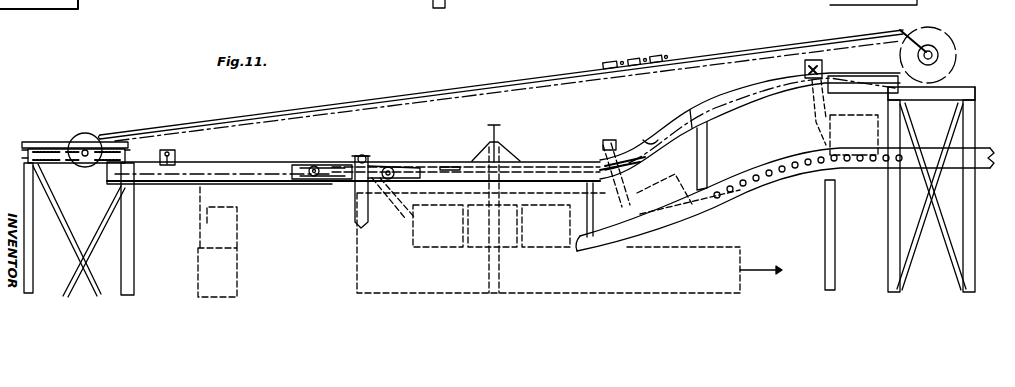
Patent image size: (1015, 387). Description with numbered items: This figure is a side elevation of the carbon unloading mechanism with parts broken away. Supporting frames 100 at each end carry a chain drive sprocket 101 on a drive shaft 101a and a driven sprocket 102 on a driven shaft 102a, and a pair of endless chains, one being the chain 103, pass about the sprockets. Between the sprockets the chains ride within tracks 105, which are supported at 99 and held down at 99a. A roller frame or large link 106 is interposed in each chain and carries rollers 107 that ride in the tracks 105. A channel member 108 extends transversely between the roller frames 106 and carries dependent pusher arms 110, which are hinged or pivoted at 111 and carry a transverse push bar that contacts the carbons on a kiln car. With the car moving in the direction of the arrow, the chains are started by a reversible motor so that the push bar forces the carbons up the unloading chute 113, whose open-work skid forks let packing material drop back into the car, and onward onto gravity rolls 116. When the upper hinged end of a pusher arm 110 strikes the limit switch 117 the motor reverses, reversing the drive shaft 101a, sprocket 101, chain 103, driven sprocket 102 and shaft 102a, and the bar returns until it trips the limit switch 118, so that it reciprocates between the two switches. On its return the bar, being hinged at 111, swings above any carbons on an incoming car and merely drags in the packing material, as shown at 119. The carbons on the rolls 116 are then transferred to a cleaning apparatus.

The track support 99 is at (586, 165).
The track hold-down 99a is at (498, 156).
The supporting frame 100 is at (135, 256).
The drive sprocket 101 is at (932, 28).
The drive shaft 101a is at (920, 40).
The driven sprocket 102 is at (80, 134).
The driven shaft 102a is at (82, 168).
The endless chain 103 is at (620, 66).
The track 105 is at (490, 88).
The roller frame 106 is at (338, 180).
The roller 107 is at (323, 166).
The channel member 108 is at (354, 158).
The pusher arm 110 is at (356, 220).
The hinge 111 is at (364, 158).
The unloading chute 113 is at (630, 226).
The gravity rolls 116 is at (747, 190).
The limit switch 117 is at (823, 70).
The limit switch 118 is at (177, 152).
The dragging position 119 is at (414, 214).